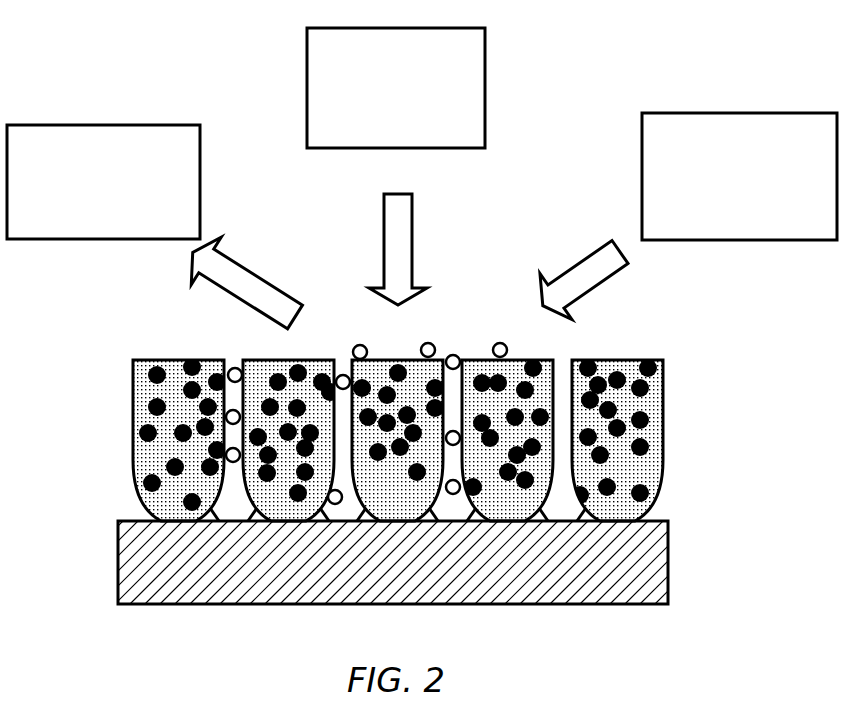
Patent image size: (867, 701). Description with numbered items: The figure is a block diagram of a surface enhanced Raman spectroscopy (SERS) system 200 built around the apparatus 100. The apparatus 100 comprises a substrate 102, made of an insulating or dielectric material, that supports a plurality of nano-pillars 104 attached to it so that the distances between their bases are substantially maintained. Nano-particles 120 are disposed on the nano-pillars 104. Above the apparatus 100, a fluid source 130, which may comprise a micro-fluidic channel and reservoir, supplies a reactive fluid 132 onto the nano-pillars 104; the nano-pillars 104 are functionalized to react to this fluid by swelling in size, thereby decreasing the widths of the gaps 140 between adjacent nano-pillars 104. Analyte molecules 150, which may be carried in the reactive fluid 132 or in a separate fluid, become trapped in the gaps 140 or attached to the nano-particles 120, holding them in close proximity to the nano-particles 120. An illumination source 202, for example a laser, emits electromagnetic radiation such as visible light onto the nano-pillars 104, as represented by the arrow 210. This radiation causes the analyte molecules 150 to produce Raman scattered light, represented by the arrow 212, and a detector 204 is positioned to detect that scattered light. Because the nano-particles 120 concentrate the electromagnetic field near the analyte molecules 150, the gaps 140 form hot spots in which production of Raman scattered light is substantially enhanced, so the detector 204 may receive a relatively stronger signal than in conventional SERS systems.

The apparatus 100 is at (103, 325).
The substrate 102 is at (668, 543).
The nano-pillars 104 is at (442, 409).
The nano-particles 120 is at (663, 362).
The fluid source 130 is at (377, 128).
The reactive fluid 132 is at (412, 229).
The gaps 140 is at (226, 350).
The analyte molecules 150 is at (342, 375).
The SERS system 200 is at (122, 42).
The illumination source 202 is at (721, 217).
The detector 204 is at (83, 208).
The arrow 210 is at (595, 246).
The arrow 212 is at (250, 271).